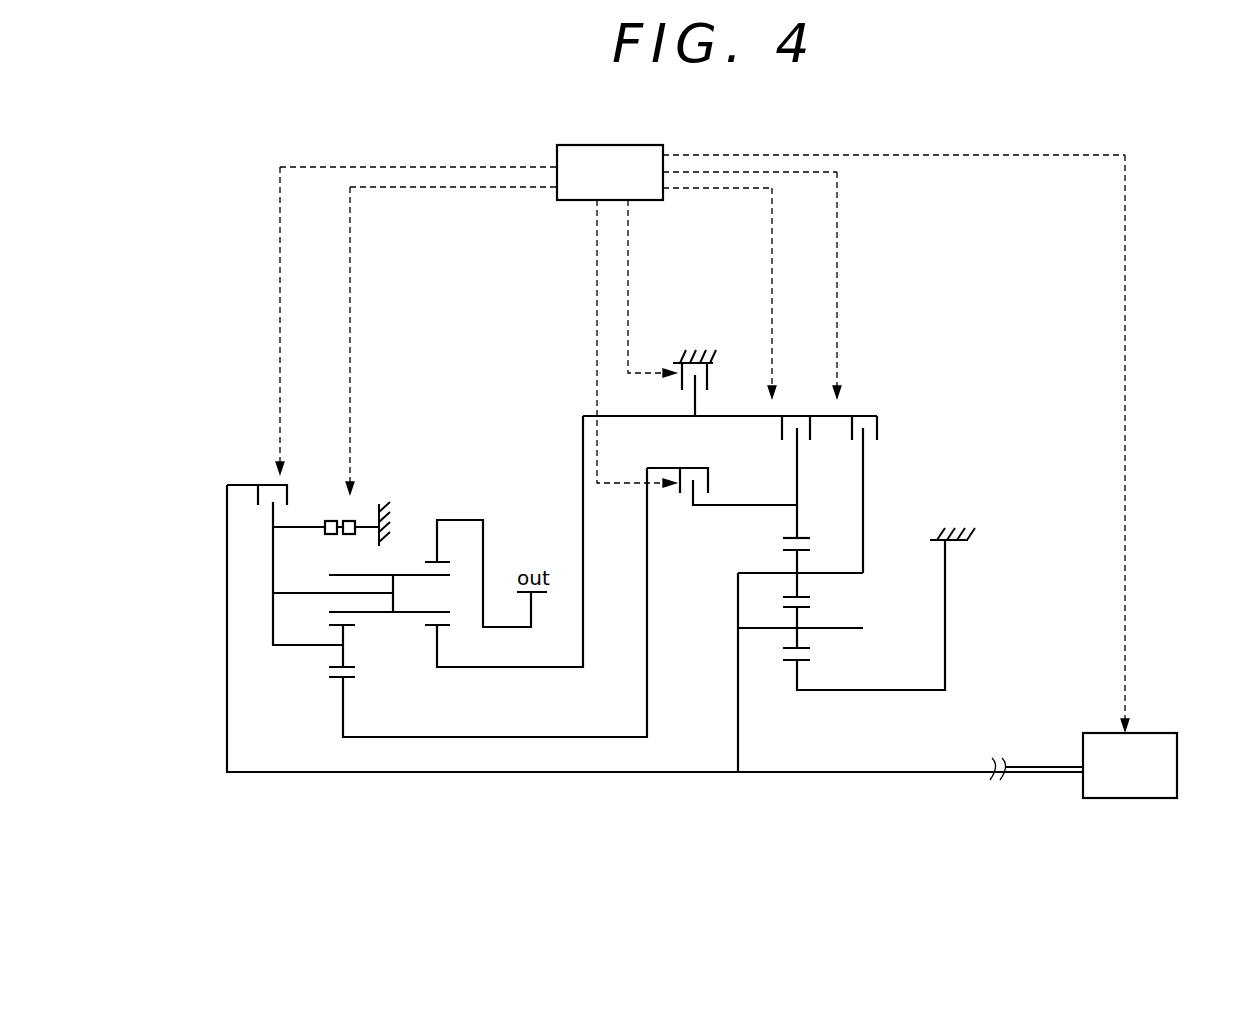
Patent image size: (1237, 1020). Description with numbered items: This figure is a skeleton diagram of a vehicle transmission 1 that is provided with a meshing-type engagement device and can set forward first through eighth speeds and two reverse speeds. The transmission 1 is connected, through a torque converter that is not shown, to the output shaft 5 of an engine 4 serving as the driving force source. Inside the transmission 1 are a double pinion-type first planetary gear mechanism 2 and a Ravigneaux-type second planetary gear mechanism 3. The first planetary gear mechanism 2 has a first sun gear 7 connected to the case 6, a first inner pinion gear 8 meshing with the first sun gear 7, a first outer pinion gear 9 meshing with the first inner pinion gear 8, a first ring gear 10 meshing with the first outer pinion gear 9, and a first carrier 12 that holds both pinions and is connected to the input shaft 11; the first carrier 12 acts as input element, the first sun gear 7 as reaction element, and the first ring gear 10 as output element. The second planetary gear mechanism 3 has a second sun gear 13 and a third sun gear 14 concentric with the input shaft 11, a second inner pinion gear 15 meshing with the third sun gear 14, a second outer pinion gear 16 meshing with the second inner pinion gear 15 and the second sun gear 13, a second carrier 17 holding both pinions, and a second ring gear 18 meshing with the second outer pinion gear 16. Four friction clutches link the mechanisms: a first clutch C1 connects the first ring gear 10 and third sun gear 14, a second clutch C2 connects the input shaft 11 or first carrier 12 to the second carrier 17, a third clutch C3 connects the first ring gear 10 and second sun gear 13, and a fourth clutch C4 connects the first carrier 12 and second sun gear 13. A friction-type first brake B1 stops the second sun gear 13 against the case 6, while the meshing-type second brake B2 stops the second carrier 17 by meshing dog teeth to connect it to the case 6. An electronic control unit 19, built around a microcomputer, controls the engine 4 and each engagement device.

The transmission 1 is at (955, 288).
The first planetary gear mechanism 2 is at (767, 472).
The second planetary gear mechanism 3 is at (361, 494).
The engine 4 is at (1177, 767).
The output shaft 5 is at (1050, 767).
The case 6 is at (381, 504).
The first sun gear 7 is at (800, 665).
The first inner pinion gear 8 is at (800, 640).
The first outer pinion gear 9 is at (800, 557).
The first ring gear 10 is at (800, 527).
The input shaft 11 is at (887, 772).
The first carrier 12 is at (738, 672).
The second sun gear 13 is at (447, 633).
The third sun gear 14 is at (335, 680).
The second inner pinion gear 15 is at (348, 645).
The second outer pinion gear 16 is at (400, 575).
The second carrier 17 is at (273, 625).
The second ring gear 18 is at (443, 562).
The electronic control unit 19 is at (610, 145).
The first clutch C1 is at (690, 520).
The second clutch C2 is at (268, 461).
The third clutch C3 is at (800, 397).
The fourth clutch C4 is at (863, 398).
The first brake B1 is at (732, 351).
The second brake B2 is at (346, 491).